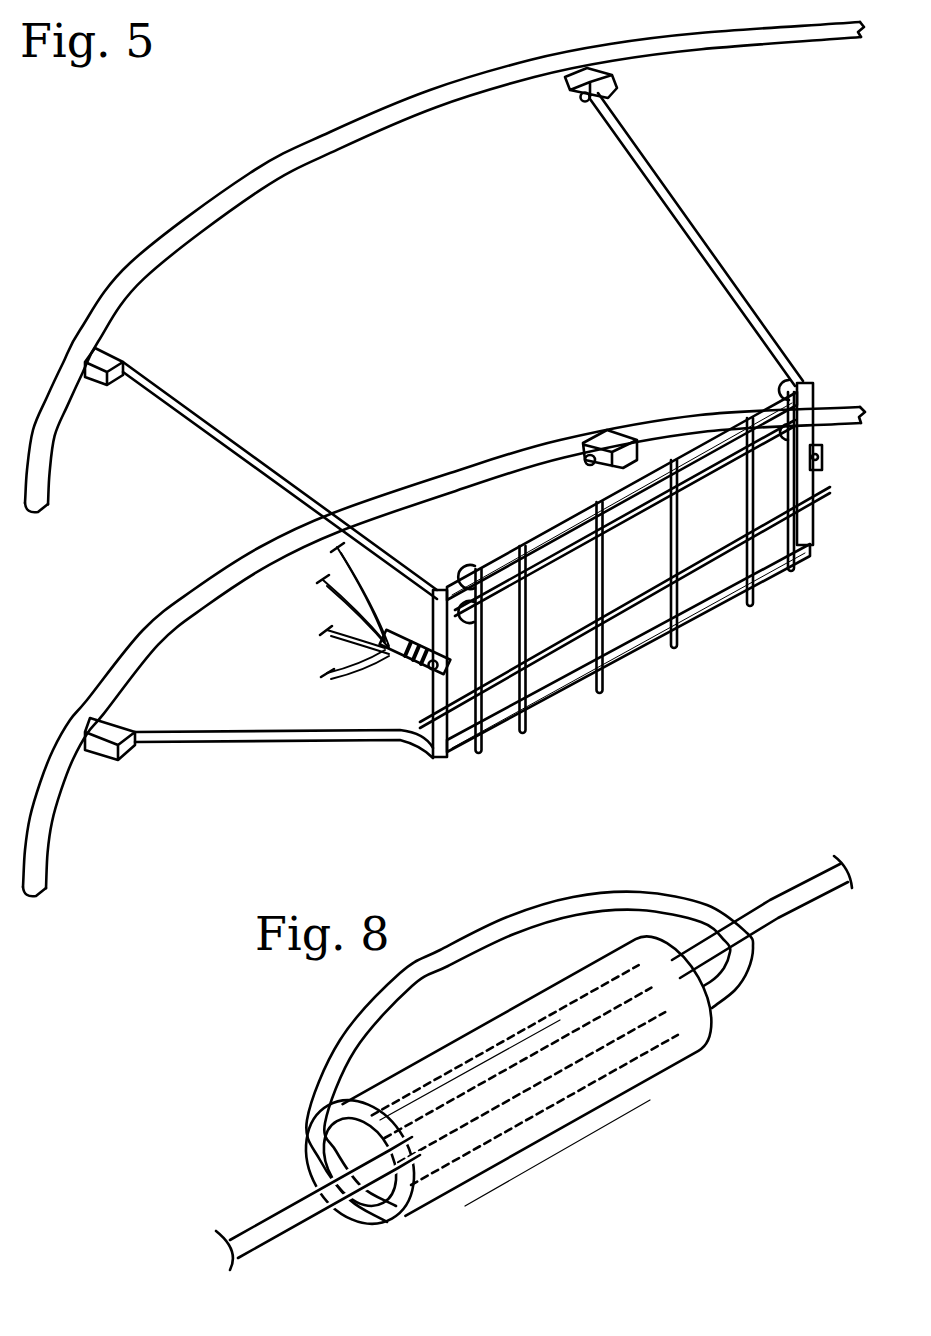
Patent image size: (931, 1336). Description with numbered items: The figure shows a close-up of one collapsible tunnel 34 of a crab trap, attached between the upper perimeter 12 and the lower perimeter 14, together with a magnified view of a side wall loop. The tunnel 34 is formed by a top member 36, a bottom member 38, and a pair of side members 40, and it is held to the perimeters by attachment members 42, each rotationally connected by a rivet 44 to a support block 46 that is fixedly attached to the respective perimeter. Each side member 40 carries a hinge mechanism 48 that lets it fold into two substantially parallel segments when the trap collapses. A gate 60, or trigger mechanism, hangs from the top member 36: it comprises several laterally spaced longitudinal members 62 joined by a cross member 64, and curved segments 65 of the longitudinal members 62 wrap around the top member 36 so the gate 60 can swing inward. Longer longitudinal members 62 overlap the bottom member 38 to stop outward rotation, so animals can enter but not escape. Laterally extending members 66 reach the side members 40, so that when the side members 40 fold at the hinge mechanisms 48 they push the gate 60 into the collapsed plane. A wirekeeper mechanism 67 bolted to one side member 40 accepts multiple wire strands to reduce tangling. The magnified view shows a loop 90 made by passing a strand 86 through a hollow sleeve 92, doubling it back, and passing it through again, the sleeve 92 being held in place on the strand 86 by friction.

In FIG. 5, the upper perimeter 12 is at (246, 180).
In FIG. 5, the lower perimeter 14 is at (453, 473).
In FIG. 5, the collapsible tunnel 34 is at (746, 623).
In FIG. 5, the top member 36 is at (571, 525).
In FIG. 5, the bottom member 38 is at (717, 581).
In FIG. 5, the side member 40 is at (430, 706).
In FIG. 5, the attachment member 42 is at (691, 216).
In FIG. 5, the rivet 44 is at (583, 99).
In FIG. 5, the support block 46 is at (597, 70).
In FIG. 5, the hinge mechanism 48 is at (430, 668).
In FIG. 5, the gate 60 is at (658, 668).
In FIG. 5, the longitudinal member 62 is at (668, 546).
In FIG. 5, the cross member 64 is at (571, 545).
In FIG. 5, the curved segment 65 is at (472, 568).
In FIG. 5, the laterally extending member 66 is at (480, 732).
In FIG. 5, the wirekeeper mechanism 67 is at (400, 637).
In FIG. 8, the strand 86 is at (790, 887).
In FIG. 8, the loop 90 is at (568, 880).
In FIG. 8, the hollow sleeve 92 is at (548, 1145).